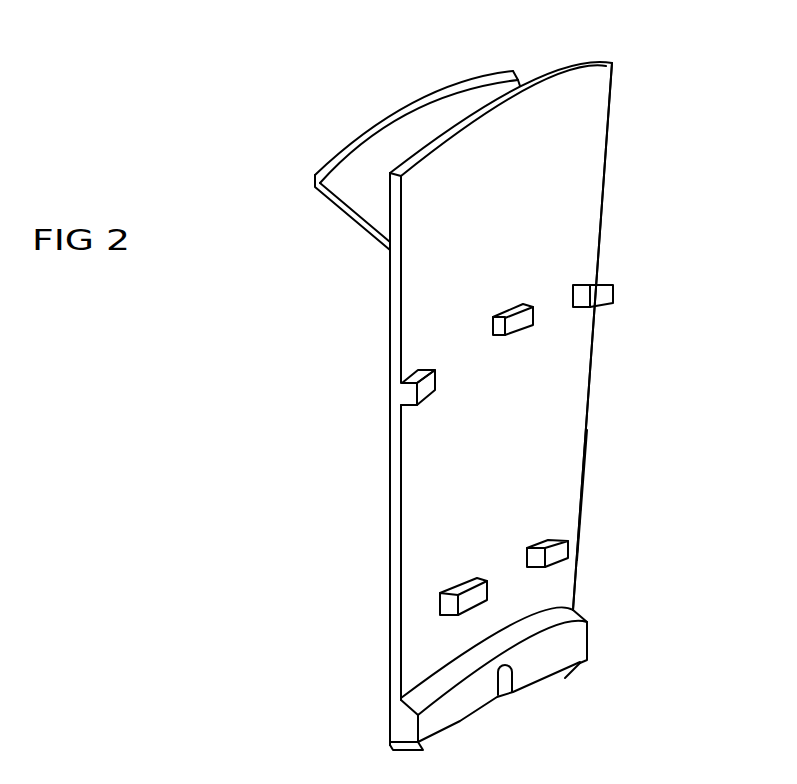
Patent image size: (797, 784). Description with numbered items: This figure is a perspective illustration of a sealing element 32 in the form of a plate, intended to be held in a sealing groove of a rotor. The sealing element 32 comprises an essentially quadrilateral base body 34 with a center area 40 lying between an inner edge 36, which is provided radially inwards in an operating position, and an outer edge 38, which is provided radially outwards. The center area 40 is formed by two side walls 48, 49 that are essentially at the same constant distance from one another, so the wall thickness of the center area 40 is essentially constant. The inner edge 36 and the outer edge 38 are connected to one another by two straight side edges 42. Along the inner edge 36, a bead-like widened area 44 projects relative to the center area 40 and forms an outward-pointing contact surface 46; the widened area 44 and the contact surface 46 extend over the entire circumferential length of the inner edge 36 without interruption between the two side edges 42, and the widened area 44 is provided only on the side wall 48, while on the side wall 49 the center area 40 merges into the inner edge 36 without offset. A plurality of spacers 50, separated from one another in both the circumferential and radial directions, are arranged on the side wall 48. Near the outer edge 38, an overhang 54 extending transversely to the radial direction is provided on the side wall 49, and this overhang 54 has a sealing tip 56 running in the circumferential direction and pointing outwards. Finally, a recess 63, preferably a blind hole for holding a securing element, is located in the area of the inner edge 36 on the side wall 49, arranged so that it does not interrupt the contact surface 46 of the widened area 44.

The sealing element 32 is at (520, 387).
The base body 34 is at (520, 387).
The inner edge 36 is at (428, 676).
The outer edge 38 is at (547, 75).
The center area 40 is at (516, 459).
The side edges 42 is at (393, 538).
The widened area 44 is at (435, 722).
The contact surface 46 is at (563, 620).
The side wall 48 is at (562, 498).
The side wall 49 is at (386, 475).
The spacers 50 is at (580, 295).
The overhang 54 is at (405, 133).
The sealing tip 56 is at (330, 163).
The recess 63 is at (508, 690).